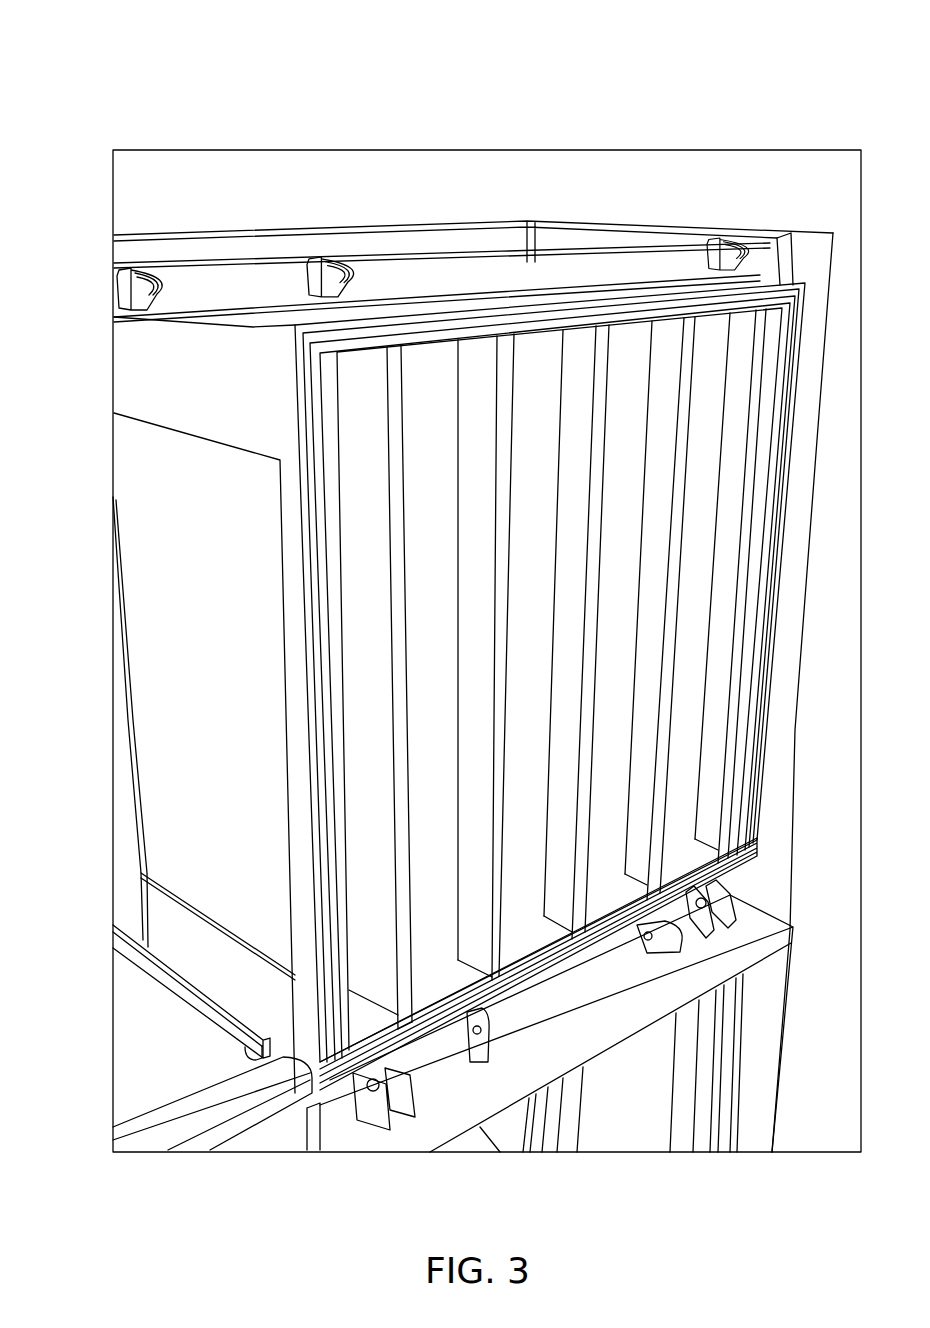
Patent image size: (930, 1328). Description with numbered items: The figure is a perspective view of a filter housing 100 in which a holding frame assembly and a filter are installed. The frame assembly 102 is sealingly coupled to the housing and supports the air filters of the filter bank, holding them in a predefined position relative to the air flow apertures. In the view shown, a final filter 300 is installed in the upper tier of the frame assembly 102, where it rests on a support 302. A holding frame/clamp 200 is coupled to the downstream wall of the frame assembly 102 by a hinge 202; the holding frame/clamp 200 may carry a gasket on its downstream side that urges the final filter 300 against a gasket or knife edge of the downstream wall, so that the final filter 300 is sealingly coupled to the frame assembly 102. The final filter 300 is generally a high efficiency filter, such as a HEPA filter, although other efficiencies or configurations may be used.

The filter assembly system 100 is at (678, 82).
The frame assembly 102 is at (190, 792).
The holding frame/clamp 200 is at (763, 1027).
The hinge 202 is at (740, 902).
The final filter 300 is at (527, 405).
The support 302 is at (715, 864).